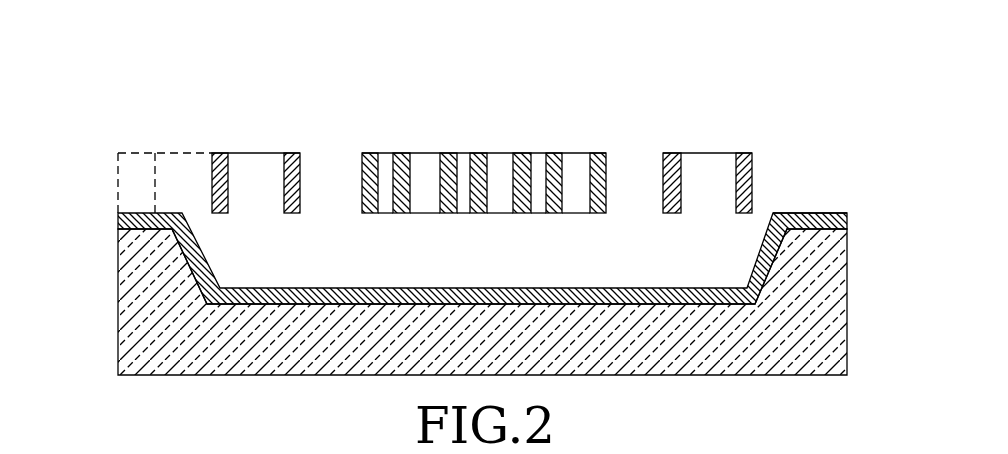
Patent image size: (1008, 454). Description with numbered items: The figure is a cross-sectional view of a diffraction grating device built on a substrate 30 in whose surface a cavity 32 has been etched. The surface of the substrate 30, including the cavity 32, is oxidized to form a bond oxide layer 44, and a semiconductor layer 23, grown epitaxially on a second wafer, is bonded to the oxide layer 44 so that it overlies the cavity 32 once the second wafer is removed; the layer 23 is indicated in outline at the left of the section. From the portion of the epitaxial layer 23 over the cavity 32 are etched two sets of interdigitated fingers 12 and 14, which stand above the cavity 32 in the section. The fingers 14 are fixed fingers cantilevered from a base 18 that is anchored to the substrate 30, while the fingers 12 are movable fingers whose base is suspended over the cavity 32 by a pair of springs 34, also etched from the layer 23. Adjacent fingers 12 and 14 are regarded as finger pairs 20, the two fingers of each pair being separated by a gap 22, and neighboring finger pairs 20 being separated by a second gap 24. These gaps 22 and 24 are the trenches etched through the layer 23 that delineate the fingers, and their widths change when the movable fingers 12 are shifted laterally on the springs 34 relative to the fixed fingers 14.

The interdigitated fingers 12 is at (403, 153).
The interdigitated fingers 14 is at (372, 153).
The base 18 is at (573, 153).
The finger pairs 20 is at (488, 144).
The gap 22 is at (385, 215).
The semiconductor layer 23 is at (163, 150).
The second gap 24 is at (427, 215).
The substrate 30 is at (278, 347).
The cavity 32 is at (637, 263).
The springs 34 is at (220, 153).
The bond oxide layer 44 is at (790, 213).